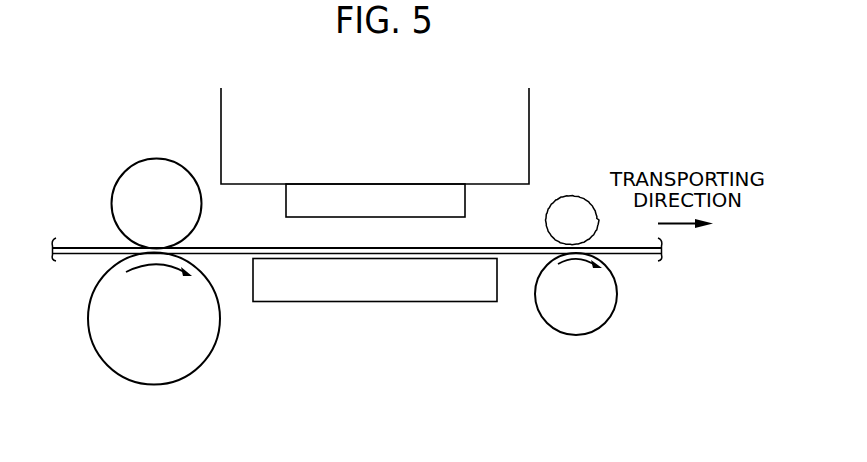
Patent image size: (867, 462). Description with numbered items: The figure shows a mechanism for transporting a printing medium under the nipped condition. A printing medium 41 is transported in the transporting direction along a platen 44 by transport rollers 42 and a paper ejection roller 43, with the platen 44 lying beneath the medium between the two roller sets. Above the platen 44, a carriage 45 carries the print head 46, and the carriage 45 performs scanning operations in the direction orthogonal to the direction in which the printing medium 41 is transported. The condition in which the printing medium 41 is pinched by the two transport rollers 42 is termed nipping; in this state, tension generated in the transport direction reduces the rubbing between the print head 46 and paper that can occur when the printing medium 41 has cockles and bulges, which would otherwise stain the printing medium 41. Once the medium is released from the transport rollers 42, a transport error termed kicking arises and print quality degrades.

The printing medium 41 is at (107, 248).
The transport rollers 42 is at (200, 351).
The paper ejection roller 43 is at (605, 313).
The platen 44 is at (441, 296).
The carriage 45 is at (520, 118).
The print head 46 is at (456, 206).